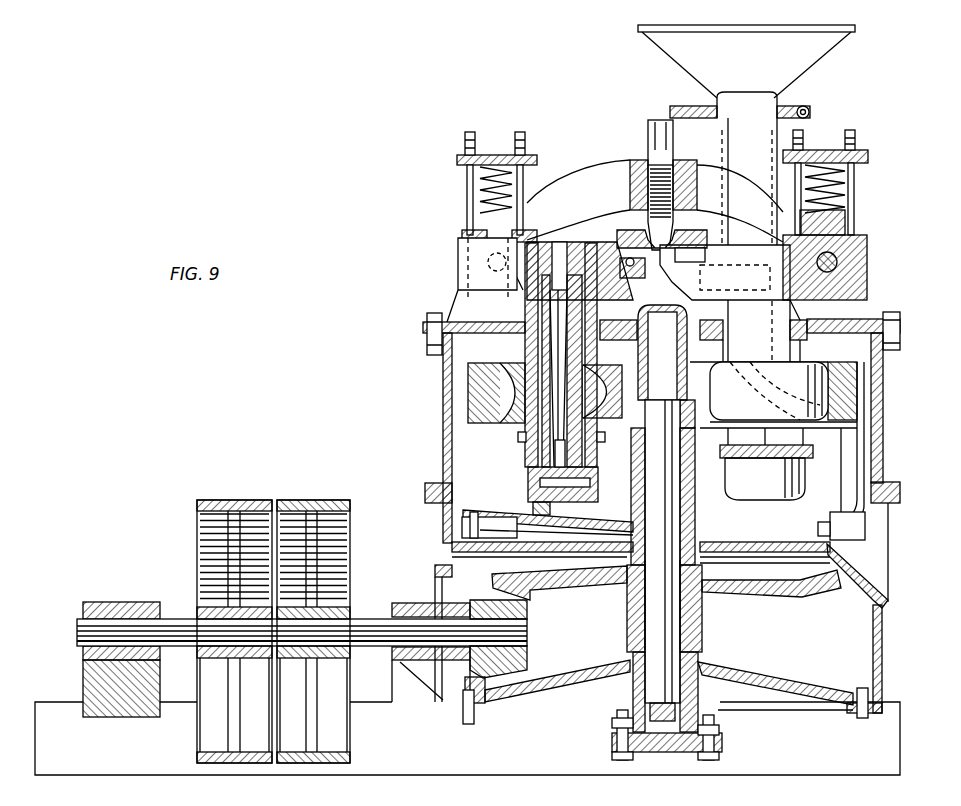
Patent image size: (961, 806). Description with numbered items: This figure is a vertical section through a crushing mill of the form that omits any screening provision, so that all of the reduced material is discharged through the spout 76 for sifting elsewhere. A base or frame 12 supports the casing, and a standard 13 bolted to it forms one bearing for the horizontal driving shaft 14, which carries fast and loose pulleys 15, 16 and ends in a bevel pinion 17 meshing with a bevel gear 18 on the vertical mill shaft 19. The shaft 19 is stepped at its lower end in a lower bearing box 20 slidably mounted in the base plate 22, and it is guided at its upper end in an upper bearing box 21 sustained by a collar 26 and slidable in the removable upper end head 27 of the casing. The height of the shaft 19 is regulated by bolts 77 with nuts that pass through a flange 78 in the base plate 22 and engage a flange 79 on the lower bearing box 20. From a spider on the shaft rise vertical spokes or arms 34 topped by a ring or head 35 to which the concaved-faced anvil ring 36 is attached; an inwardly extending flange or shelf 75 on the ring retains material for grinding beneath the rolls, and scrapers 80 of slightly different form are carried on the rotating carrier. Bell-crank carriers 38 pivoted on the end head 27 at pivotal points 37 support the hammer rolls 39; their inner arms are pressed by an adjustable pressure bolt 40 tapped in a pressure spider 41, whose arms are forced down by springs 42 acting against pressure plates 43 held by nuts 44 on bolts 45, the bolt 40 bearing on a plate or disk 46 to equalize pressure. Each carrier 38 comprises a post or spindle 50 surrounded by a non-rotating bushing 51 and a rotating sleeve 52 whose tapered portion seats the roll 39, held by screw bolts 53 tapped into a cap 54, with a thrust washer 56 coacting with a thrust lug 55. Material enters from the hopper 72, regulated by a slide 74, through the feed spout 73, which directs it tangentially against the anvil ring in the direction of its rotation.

The base or frame 12 is at (467, 629).
The standard 13 is at (88, 688).
The driving shaft 14 is at (178, 620).
The fast pulley 15 is at (234, 498).
The loose pulley 16 is at (317, 498).
The bevel pinion 17 is at (527, 660).
The bevel gear 18 is at (610, 595).
The vertical mill shaft 19 is at (665, 623).
The lower bearing box 20 is at (698, 690).
The upper bearing box 21 is at (662, 306).
The base plate 22 is at (803, 680).
The collar 26 is at (694, 413).
The upper end head 27 is at (855, 322).
The spokes or arms 34 is at (884, 455).
The ring or head 35 is at (866, 401).
The anvil ring 36 is at (858, 382).
The pivotal points 37 is at (458, 268).
The bell-crank carriers 38 is at (598, 256).
The hammer rolls 39 is at (648, 393).
The pressure bolt 40 is at (648, 136).
The pressure spider 41 is at (630, 225).
The springs 42 is at (480, 195).
The pressure plates 43 is at (500, 155).
The nuts 44 is at (462, 147).
The bolts 45 is at (466, 223).
The plate or disk 46 is at (695, 243).
The post or spindle 50 is at (542, 357).
The non-rotating bushing 51 is at (520, 437).
The rotating sleeve 52 is at (525, 344).
The screw bolts 53 is at (718, 452).
The cap 54 is at (680, 470).
The thrust lug 55 is at (566, 502).
The thrust washer 56 is at (528, 490).
The hopper 72 is at (797, 62).
The feed spout 73 is at (703, 240).
The slide 74 is at (812, 116).
The flange or shelf 75 is at (858, 430).
The spout 76 is at (880, 563).
The bolts 77 is at (612, 745).
The flange 78 is at (720, 725).
The flange 79 is at (642, 752).
The scrapers 80 is at (460, 531).